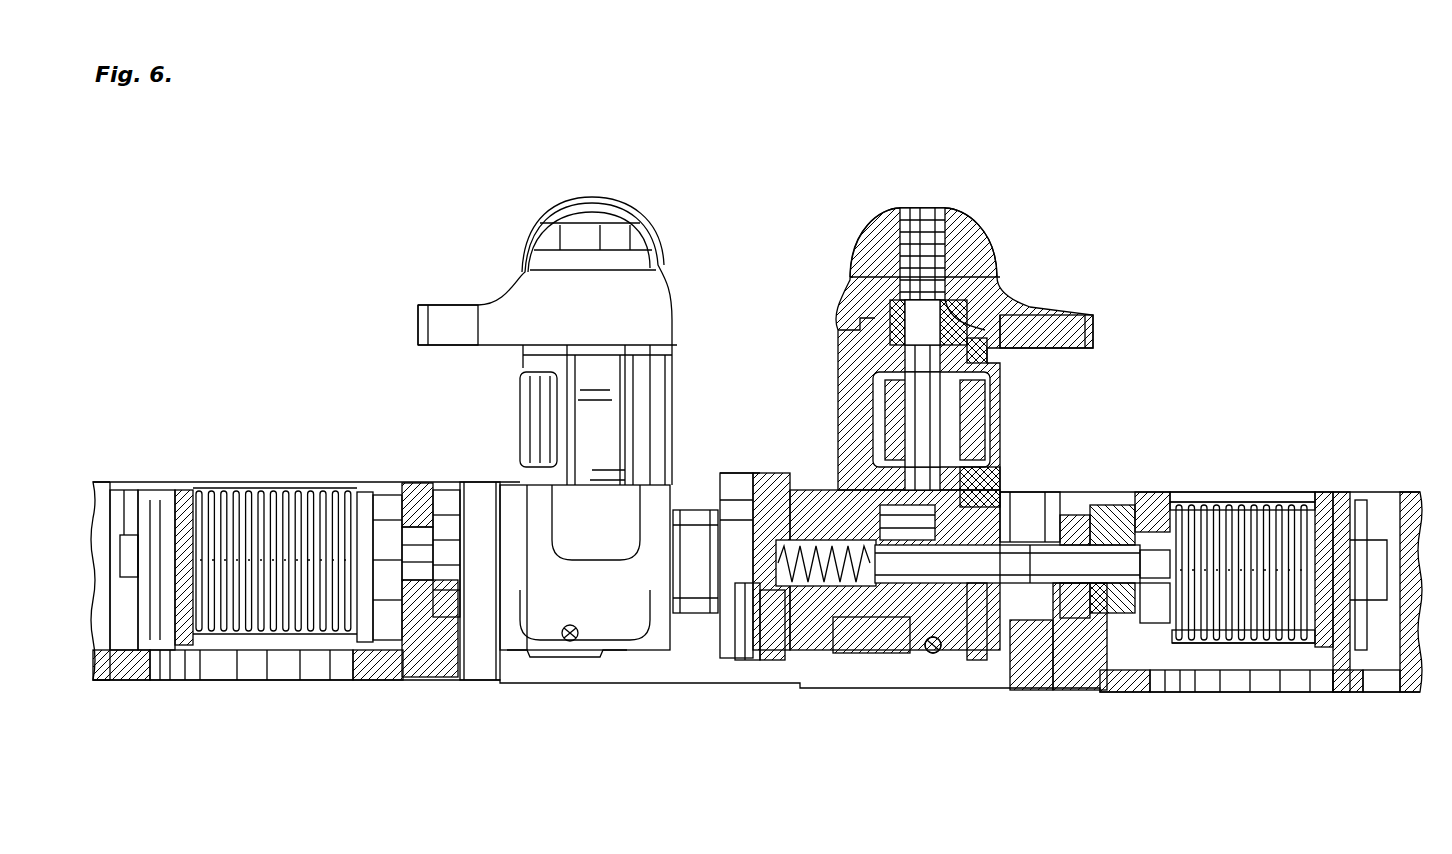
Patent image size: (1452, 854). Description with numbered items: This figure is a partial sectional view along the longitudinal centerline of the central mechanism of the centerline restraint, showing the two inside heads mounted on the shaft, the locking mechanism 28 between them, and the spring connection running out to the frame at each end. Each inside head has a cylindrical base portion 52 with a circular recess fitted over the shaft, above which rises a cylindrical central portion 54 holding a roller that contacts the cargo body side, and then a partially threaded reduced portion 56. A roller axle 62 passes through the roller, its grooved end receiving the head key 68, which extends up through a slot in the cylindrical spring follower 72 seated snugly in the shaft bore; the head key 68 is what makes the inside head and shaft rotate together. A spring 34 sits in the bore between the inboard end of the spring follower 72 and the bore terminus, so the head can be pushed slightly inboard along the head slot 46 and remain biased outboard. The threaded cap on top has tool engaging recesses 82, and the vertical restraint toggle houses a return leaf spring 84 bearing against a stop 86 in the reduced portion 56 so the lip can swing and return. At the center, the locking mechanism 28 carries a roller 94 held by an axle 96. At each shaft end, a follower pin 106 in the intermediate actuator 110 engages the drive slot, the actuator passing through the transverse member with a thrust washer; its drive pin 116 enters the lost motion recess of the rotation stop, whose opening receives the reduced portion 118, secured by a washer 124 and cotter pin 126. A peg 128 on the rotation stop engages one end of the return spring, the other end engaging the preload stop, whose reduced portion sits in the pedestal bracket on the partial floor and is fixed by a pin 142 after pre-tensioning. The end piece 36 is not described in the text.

The locking mechanism 28 is at (725, 480).
The spring 34 is at (790, 652).
The end piece 36 is at (375, 662).
The head slot 46 is at (845, 490).
The cylindrical base portion 52 is at (870, 653).
The cylindrical central portion 54 is at (837, 410).
The partially threaded reduced portion 56 is at (947, 212).
The roller axle 62 is at (985, 358).
The head key 68 is at (985, 505).
The spring follower 72 is at (959, 564).
The tool engaging recesses 82 is at (612, 238).
The return leaf spring 84 is at (1000, 290).
The stop 86 is at (840, 328).
The roller 94 is at (745, 658).
The axle 96 is at (771, 660).
The follower pin 106 is at (1078, 515).
The intermediate actuator 110 is at (1115, 564).
The drive pin 116 is at (1122, 505).
The reduced portion 118 is at (1160, 495).
The washer 124 is at (1225, 492).
The cotter pin 126 is at (1255, 495).
The peg 128 is at (1200, 645).
The pin 142 is at (1345, 668).